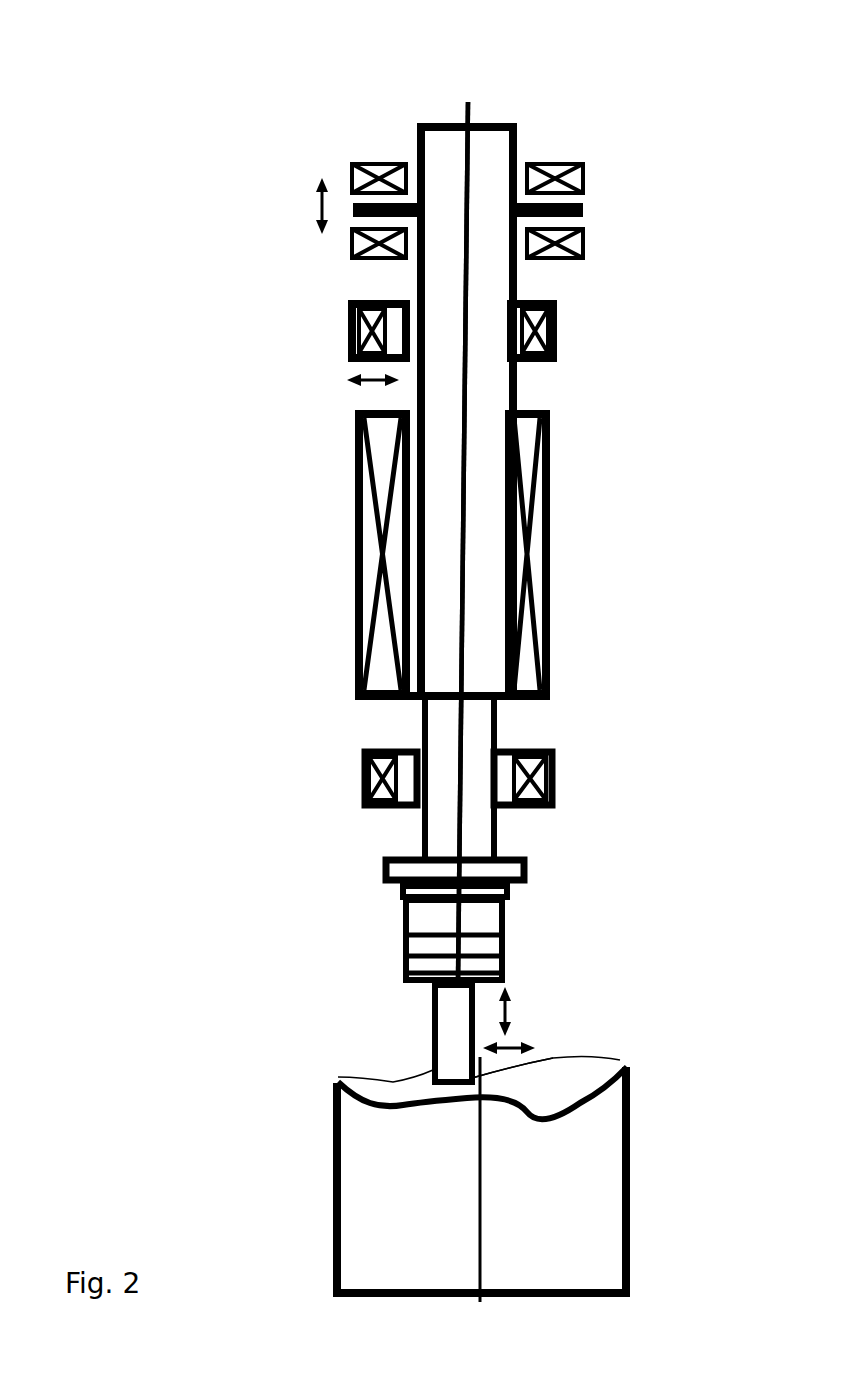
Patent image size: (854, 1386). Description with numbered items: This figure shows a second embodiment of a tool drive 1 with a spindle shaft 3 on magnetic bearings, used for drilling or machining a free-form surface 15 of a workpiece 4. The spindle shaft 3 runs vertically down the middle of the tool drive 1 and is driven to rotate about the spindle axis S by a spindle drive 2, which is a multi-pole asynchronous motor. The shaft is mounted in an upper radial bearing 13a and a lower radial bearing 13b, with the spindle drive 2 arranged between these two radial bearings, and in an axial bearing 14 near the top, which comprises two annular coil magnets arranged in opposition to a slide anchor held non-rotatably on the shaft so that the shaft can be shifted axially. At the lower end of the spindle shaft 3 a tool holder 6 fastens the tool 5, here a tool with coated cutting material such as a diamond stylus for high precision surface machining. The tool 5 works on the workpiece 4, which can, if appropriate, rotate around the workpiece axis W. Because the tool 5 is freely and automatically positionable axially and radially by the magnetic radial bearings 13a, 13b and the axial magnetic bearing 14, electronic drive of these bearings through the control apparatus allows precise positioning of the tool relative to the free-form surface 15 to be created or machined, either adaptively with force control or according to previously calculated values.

The tool drive 1 is at (538, 96).
The spindle axis S is at (465, 150).
The spindle shaft 3 is at (494, 573).
The axial bearing 14 is at (585, 227).
The upper radial bearing 13a is at (555, 343).
The spindle drive 2 is at (570, 456).
The lower radial bearing 13b is at (360, 750).
The tool holder 6 is at (385, 909).
The tool 5 is at (432, 1005).
The workpiece 4 is at (605, 1165).
The workpiece surface 15 is at (540, 1090).
The workpiece axis W is at (478, 1258).